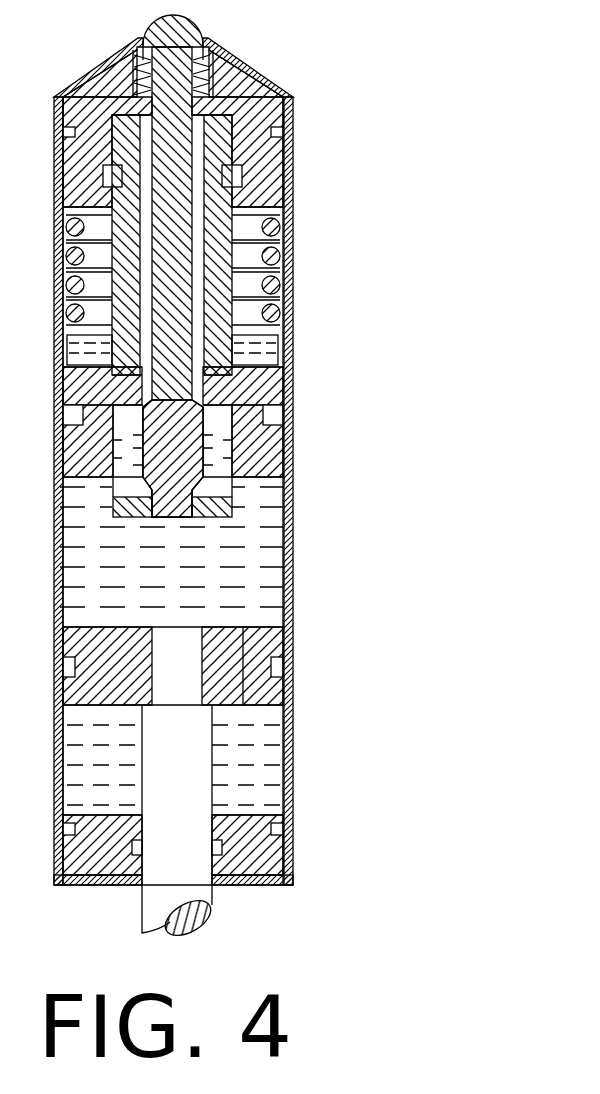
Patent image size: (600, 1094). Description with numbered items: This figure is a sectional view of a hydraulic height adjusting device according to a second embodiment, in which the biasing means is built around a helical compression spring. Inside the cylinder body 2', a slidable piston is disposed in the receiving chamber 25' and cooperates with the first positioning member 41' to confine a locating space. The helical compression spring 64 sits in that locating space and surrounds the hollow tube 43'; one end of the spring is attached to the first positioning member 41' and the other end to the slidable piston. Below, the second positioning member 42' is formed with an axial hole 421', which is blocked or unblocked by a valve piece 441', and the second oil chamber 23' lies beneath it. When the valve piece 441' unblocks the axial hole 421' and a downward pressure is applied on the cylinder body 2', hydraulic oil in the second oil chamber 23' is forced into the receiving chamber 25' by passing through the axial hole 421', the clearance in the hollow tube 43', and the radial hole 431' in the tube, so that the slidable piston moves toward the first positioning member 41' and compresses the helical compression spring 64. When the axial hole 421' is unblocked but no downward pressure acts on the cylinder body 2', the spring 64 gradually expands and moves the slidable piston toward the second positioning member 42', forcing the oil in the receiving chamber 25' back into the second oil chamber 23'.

The cylinder body 2' is at (210, 461).
The first positioning member 41' is at (227, 127).
The hollow tube 43' is at (248, 245).
The helical compression spring 64 is at (265, 225).
The receiving chamber 25' is at (284, 330).
The radial hole 431' is at (244, 376).
The second positioning member 42' is at (232, 433).
The axial hole 421' is at (285, 451).
The valve piece 441' is at (261, 492).
The second oil chamber 23' is at (237, 542).